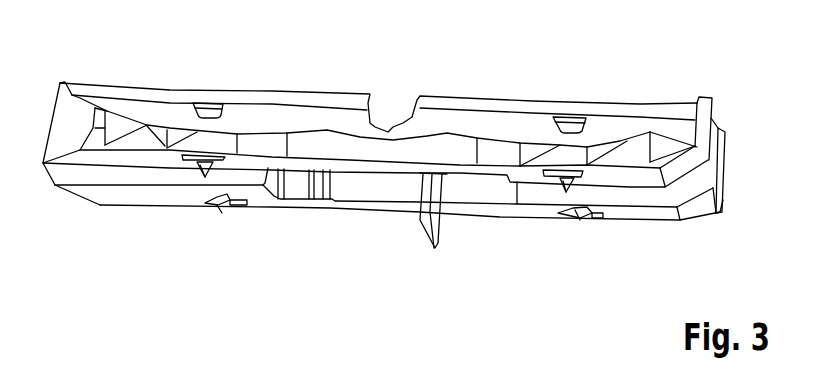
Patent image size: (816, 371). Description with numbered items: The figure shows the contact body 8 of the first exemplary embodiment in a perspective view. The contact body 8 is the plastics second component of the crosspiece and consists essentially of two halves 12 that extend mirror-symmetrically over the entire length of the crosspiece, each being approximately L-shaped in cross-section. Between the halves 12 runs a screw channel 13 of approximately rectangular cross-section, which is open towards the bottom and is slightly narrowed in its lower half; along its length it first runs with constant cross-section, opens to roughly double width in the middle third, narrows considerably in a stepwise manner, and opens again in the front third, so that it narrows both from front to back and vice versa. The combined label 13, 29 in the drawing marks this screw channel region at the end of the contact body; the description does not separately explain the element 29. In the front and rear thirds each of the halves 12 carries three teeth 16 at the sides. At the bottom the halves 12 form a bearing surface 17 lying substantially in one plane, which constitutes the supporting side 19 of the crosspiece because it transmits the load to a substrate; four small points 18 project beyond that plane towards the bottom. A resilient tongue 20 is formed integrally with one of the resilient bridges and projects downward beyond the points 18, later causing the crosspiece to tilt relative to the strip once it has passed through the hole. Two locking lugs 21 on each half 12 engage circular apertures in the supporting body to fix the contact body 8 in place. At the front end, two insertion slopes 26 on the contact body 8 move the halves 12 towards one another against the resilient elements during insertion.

The contact body 8 is at (602, 89).
The halves 12 is at (633, 108).
The screw channel 13 is at (745, 132).
The stop element 29 is at (733, 153).
The teeth 16 is at (147, 127).
The bearing surface 17 is at (620, 247).
The supporting side 19 is at (653, 217).
The points 18 is at (216, 212).
The resilient tongue 20 is at (440, 244).
The locking lugs 21 is at (217, 103).
The insertion slopes 26 is at (49, 123).